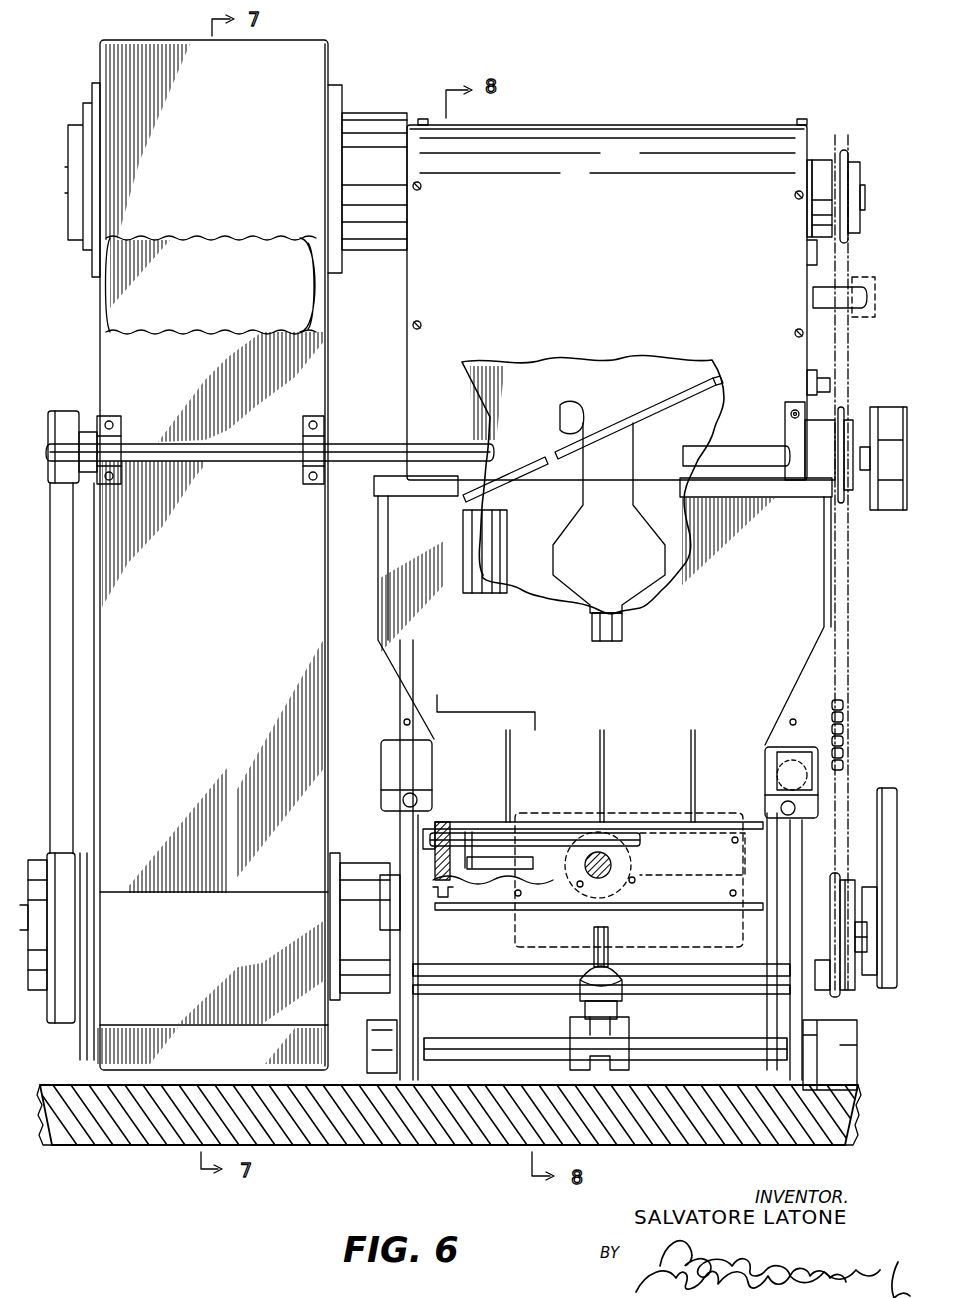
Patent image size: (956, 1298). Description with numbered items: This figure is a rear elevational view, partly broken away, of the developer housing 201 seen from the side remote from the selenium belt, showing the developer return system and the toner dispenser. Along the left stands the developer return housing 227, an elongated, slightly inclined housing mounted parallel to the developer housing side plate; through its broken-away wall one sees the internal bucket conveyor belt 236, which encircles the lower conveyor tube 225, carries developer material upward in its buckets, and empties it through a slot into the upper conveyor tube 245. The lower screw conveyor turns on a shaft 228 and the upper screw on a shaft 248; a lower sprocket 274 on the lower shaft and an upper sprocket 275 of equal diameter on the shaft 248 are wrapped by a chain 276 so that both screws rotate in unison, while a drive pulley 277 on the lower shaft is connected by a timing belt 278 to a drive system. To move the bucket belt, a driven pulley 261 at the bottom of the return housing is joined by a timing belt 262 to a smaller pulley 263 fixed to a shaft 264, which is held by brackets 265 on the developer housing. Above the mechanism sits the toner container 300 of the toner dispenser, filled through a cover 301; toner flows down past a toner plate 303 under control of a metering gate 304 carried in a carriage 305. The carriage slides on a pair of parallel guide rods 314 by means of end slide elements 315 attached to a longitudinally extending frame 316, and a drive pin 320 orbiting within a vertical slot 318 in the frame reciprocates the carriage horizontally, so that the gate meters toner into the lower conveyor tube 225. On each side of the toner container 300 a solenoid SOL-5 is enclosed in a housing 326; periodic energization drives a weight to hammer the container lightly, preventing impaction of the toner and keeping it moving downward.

The housing 201 is at (698, 126).
The upper sprocket 275 is at (840, 147).
The shaft 248 is at (864, 205).
The conveyor tube 245 is at (376, 245).
The developer return housing 227 is at (98, 344).
The internal bucket conveyor belt 236 is at (174, 319).
The smaller pulley 263 is at (84, 415).
The shaft 264 is at (360, 444).
The chain 276 is at (848, 353).
The cover 301 is at (407, 489).
The brackets 265 is at (794, 481).
The toner container 300 is at (822, 593).
The timing belt 262 is at (72, 679).
The housings 326 is at (406, 739).
The solenoids SOL-5 is at (791, 750).
The guide rods 314 is at (533, 823).
The end slide elements 315 is at (463, 823).
The drive pin 320 is at (575, 825).
The metering gate 304 is at (493, 860).
The timing belt 278 is at (877, 788).
The conveyor tube 225 is at (366, 862).
The toner plate 303 is at (455, 880).
The slot 318 is at (634, 880).
The drive pulley 277 is at (873, 887).
The carriage 305 is at (513, 913).
The frame 316 is at (556, 913).
The shaft 228 is at (839, 983).
The lower sprocket 274 is at (838, 1013).
The driven pulley 261 is at (50, 1021).